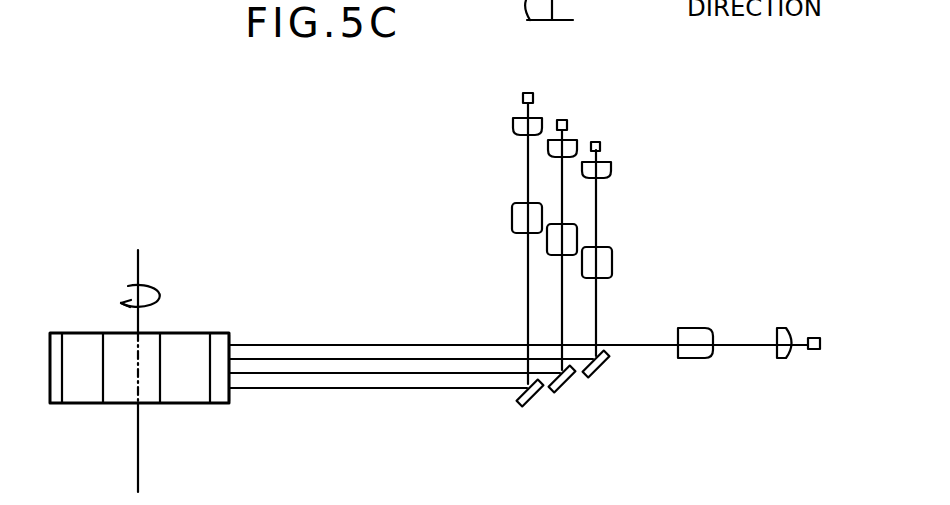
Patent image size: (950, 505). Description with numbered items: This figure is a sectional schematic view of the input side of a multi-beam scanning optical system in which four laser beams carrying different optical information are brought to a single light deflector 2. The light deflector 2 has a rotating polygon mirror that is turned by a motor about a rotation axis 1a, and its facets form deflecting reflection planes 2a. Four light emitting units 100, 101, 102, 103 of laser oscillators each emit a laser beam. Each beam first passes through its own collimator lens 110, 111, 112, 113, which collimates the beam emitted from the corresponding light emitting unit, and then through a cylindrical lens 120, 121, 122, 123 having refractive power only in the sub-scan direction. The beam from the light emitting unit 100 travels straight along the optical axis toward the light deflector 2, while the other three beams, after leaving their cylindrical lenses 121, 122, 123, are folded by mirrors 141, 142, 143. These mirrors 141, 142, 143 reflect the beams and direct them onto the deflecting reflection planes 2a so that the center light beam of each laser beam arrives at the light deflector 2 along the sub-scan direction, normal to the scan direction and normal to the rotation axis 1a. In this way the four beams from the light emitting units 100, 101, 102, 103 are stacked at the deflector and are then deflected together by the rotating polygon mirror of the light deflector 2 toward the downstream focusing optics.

The light deflector 2 is at (188, 345).
The rotation axis 1a is at (140, 449).
The deflecting reflection plane 2a is at (231, 402).
The light emitting unit 100 is at (812, 338).
The light emitting unit 101 is at (600, 146).
The light emitting unit 102 is at (567, 124).
The light emitting unit 103 is at (533, 97).
The collimator lens 110 is at (785, 328).
The collimator lens 111 is at (583, 172).
The collimator lens 112 is at (548, 148).
The collimator lens 113 is at (513, 125).
The cylindrical lens 120 is at (690, 328).
The cylindrical lens 121 is at (582, 267).
The cylindrical lens 122 is at (547, 240).
The cylindrical lens 123 is at (512, 213).
The mirror 141 is at (602, 371).
The mirror 142 is at (565, 388).
The mirror 143 is at (518, 405).